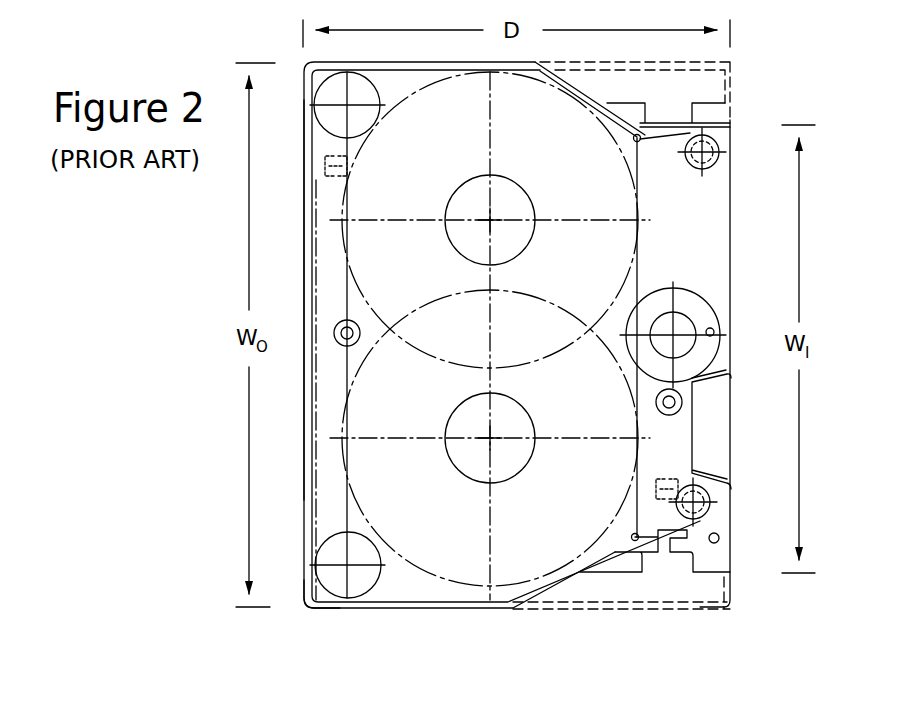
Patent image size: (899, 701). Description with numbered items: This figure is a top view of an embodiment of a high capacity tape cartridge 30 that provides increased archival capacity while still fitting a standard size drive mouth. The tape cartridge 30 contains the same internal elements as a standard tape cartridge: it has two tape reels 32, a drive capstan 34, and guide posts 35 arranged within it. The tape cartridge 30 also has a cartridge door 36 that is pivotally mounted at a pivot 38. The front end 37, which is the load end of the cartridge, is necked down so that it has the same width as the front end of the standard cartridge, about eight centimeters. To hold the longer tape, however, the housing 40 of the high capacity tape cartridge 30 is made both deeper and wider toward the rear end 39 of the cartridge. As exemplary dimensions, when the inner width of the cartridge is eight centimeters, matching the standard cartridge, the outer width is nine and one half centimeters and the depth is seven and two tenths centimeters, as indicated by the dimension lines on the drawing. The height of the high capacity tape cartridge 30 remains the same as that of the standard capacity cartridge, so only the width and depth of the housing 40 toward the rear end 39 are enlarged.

The high capacity tape cartridge 30 is at (440, 612).
The tape reels 32 is at (516, 180).
The drive capstan 34 is at (712, 312).
The guide posts 35 is at (716, 146).
The cartridge door 36 is at (733, 438).
The front end 37 is at (732, 210).
The pivot 38 is at (719, 541).
The rear end 39 is at (303, 187).
The housing 40 is at (310, 612).